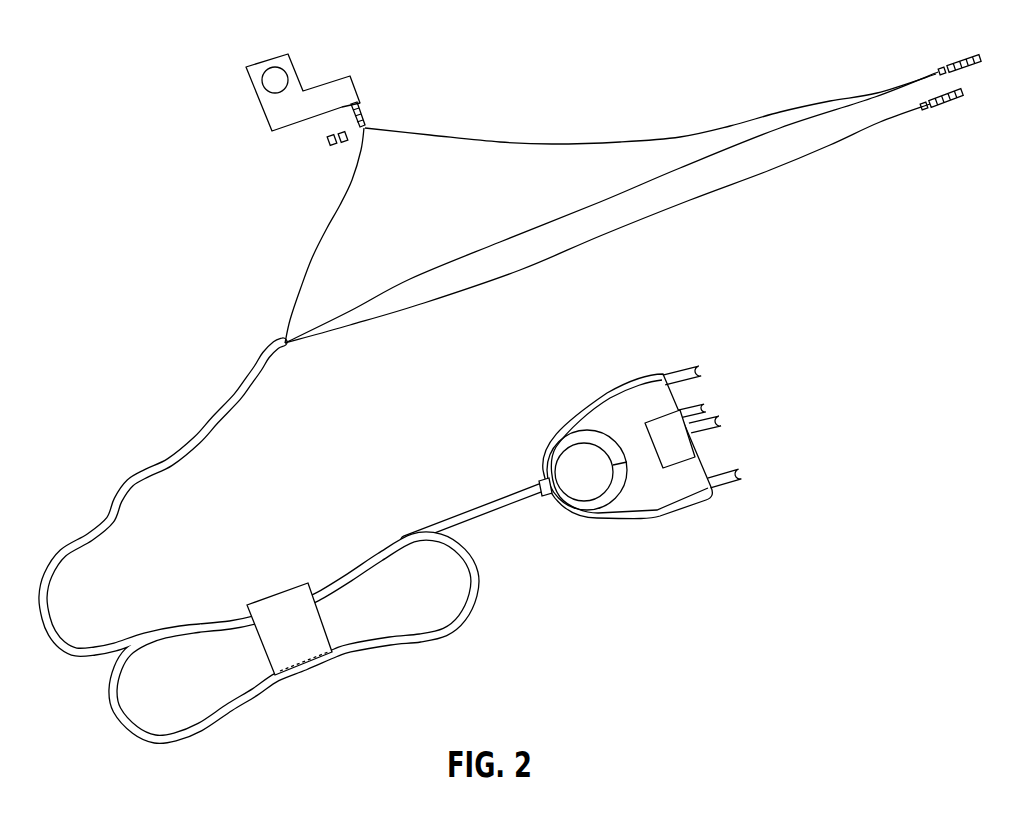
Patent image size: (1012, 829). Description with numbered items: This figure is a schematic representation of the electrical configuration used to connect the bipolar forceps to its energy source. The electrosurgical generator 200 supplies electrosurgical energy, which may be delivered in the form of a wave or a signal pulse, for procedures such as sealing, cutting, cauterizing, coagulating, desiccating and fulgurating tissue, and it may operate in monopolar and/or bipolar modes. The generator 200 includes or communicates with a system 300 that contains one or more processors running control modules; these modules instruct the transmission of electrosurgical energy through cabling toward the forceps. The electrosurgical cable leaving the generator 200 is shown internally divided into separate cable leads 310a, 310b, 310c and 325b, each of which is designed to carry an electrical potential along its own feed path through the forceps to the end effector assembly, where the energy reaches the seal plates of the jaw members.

The electrosurgical generator 200 is at (277, 78).
The system 300 is at (252, 84).
The first cable 310a is at (327, 228).
The second cable 310b is at (410, 279).
The third cable 310c is at (552, 144).
The cable lead 325b is at (424, 303).